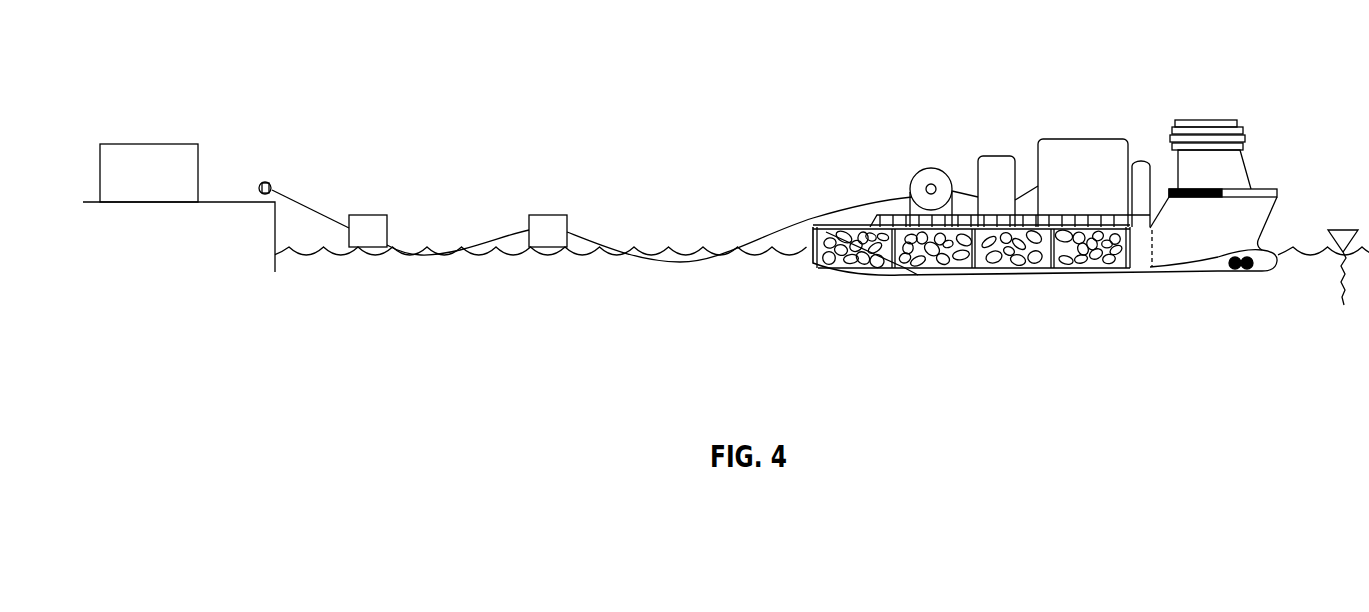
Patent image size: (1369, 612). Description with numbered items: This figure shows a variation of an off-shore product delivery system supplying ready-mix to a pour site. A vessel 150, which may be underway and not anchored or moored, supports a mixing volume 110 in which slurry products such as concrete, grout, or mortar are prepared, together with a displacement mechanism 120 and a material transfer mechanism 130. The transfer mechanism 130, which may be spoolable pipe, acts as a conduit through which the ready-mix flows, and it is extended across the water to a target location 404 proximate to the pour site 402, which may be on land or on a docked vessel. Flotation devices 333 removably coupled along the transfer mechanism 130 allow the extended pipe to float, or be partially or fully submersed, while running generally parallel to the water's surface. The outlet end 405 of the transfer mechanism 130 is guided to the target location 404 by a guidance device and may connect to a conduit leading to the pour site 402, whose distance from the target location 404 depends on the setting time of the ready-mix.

The pour site 402 is at (152, 143).
The target location 404 is at (270, 182).
The outlet end 405 is at (276, 187).
The flotation devices 333 is at (368, 214).
The transfer mechanism 130 is at (931, 168).
The displacement mechanism 120 is at (997, 156).
The mixing volume 110 is at (1082, 138).
The vessel 150 is at (1197, 273).